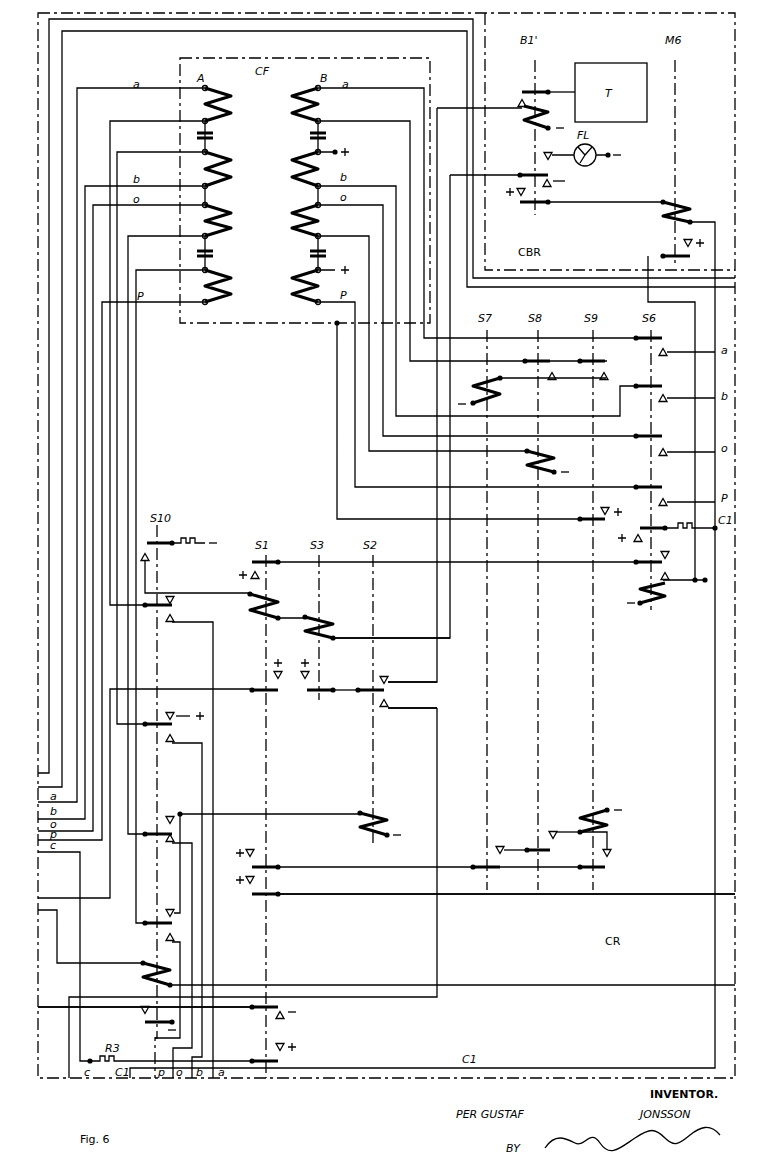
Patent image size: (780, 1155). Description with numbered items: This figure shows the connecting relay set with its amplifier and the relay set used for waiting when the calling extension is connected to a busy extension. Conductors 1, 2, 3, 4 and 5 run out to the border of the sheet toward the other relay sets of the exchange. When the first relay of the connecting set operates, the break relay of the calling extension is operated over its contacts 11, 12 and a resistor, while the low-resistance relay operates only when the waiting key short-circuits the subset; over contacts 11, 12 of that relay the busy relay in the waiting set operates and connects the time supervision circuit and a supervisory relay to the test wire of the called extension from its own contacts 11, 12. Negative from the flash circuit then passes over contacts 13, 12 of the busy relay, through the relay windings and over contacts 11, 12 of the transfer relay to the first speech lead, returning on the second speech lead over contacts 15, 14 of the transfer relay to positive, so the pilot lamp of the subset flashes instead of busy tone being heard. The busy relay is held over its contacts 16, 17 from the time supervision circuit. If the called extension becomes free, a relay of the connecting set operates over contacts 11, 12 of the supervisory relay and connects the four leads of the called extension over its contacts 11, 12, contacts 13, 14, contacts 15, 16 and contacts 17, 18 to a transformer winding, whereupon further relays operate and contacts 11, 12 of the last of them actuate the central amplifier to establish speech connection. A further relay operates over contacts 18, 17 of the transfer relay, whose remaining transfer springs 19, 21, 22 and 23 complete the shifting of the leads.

The conductor 1 is at (386, 396).
The conductor 2 is at (386, 409).
The conductor 3 is at (388, 890).
The conductor 4 is at (388, 943).
The conductor 5 is at (145, 999).
The relay contact 11 is at (422, 595).
The relay contact 12 is at (385, 619).
The relay contact 13 is at (440, 629).
The relay contact 14 is at (414, 529).
The relay contact 15 is at (401, 456).
The relay contact 16 is at (440, 577).
The relay contact 17 is at (440, 507).
The relay contact 18 is at (401, 609).
The transfer contact 19 is at (178, 957).
The transfer contact 21 is at (172, 906).
The transfer contact 22 is at (156, 918).
The transfer contact 23 is at (167, 986).